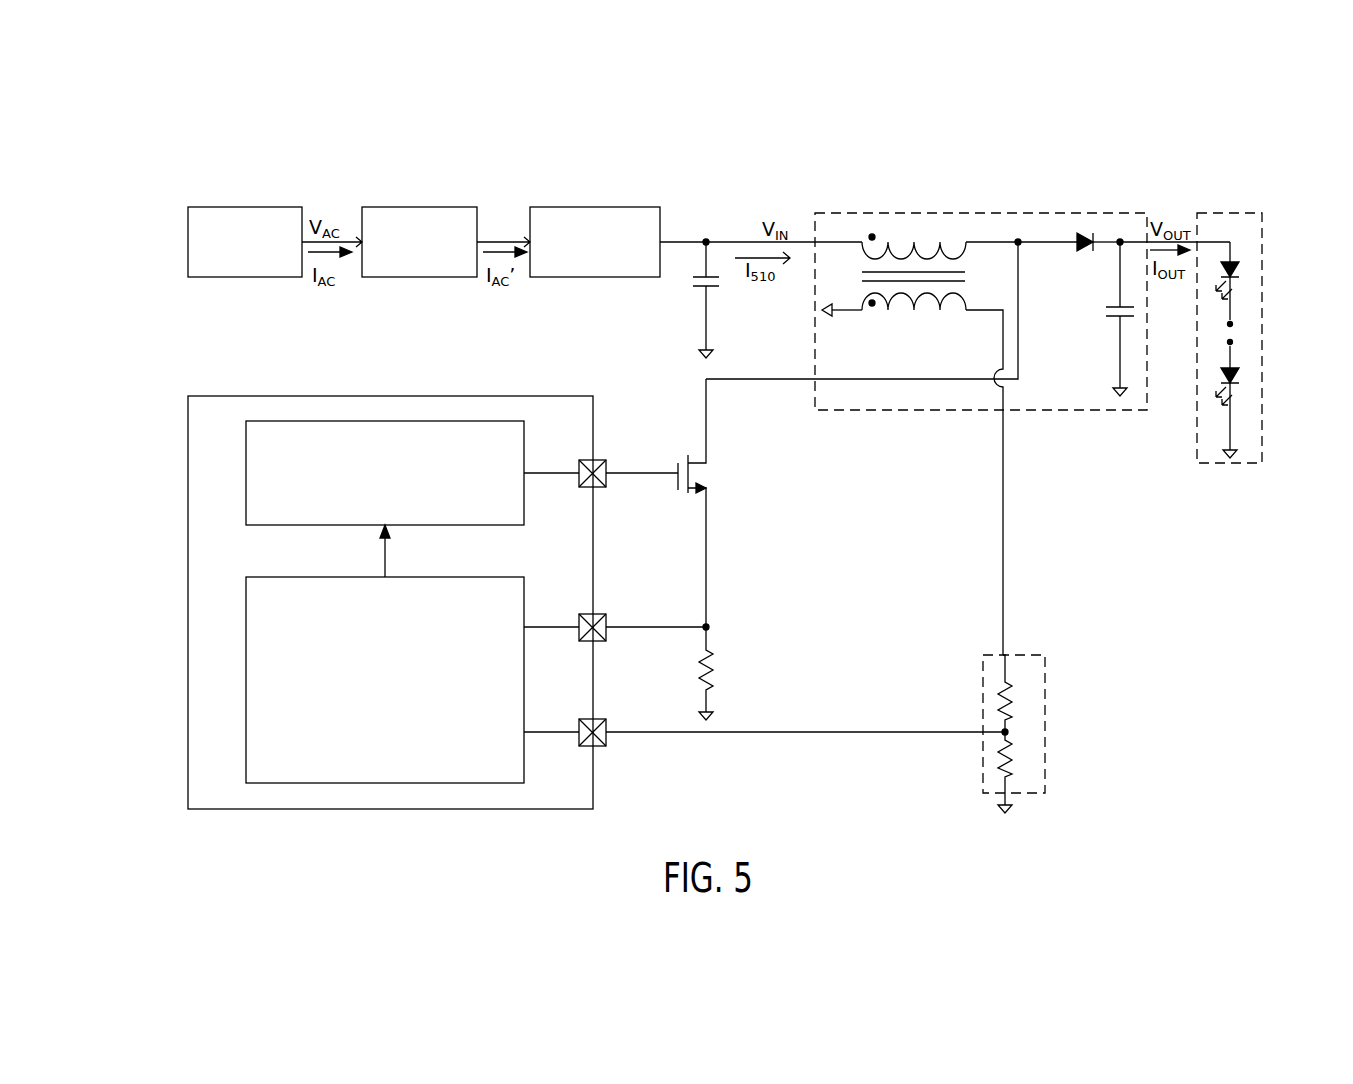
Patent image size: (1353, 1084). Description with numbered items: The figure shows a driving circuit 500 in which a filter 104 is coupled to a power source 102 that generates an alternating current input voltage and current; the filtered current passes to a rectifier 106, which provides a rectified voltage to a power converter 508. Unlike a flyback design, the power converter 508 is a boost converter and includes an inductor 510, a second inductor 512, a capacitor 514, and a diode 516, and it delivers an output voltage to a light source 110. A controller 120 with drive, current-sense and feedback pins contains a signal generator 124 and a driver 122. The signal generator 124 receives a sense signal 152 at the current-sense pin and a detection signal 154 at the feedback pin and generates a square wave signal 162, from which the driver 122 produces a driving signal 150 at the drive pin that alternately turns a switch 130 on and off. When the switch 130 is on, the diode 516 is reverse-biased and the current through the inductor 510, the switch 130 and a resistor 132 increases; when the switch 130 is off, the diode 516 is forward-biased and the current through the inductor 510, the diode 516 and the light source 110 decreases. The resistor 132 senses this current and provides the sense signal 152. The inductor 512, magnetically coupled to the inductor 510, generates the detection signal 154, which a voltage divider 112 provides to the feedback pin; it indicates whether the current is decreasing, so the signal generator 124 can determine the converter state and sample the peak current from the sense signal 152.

The driving circuit 500 is at (213, 155).
The power source 102 is at (236, 207).
The filter 104 is at (405, 207).
The rectifier 106 is at (548, 207).
The power converter 508 is at (968, 214).
The inductor 510 is at (963, 256).
The inductor 512 is at (945, 320).
The capacitor 514 is at (1113, 306).
The diode 516 is at (1078, 240).
The light source 110 is at (1240, 211).
The controller 120 is at (228, 395).
The driver 122 is at (246, 470).
The signal generator 124 is at (246, 678).
The square wave signal 162 is at (385, 562).
The driving signal 150 is at (669, 473).
The switch 130 is at (704, 486).
The sense signal 152 is at (669, 627).
The resistor 132 is at (706, 655).
The detection signal 154 is at (800, 732).
The voltage divider 112 is at (984, 678).